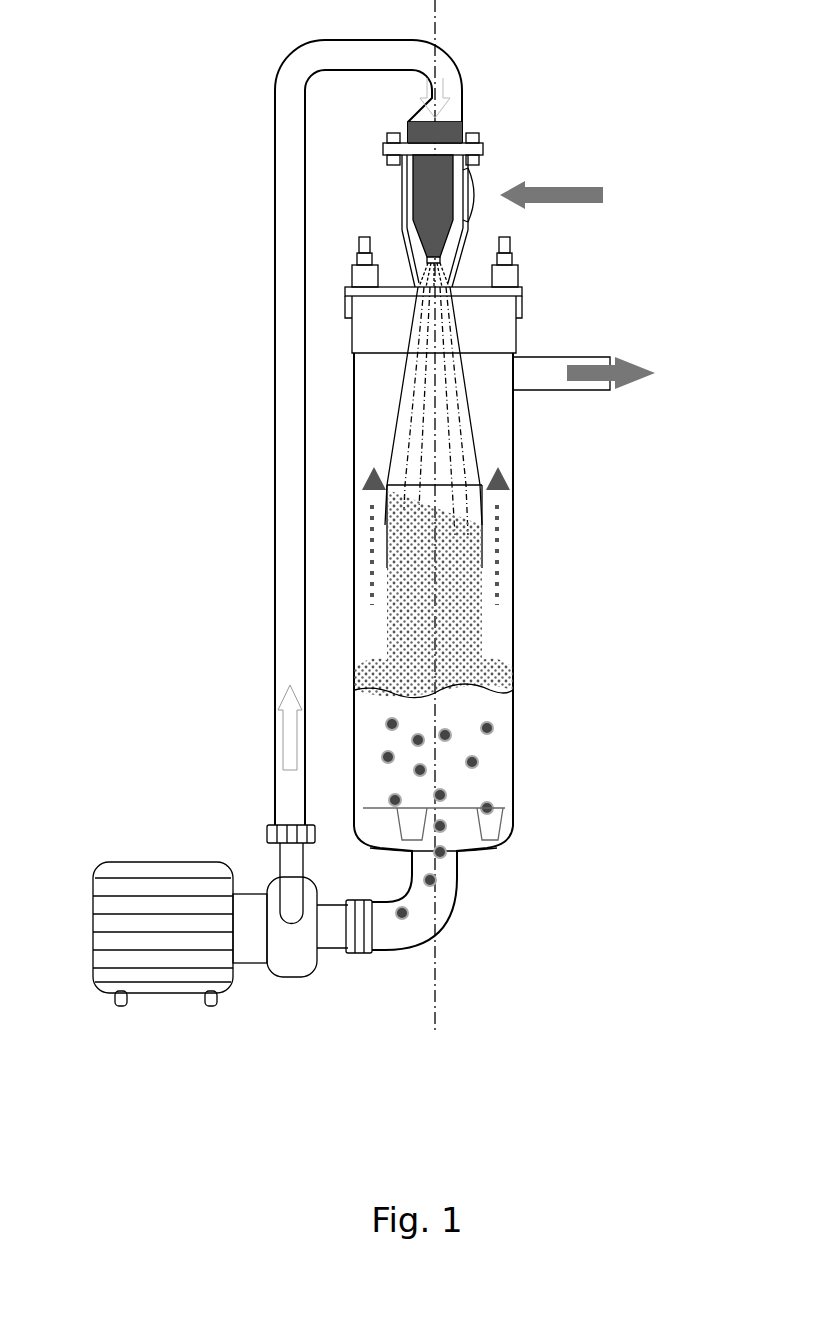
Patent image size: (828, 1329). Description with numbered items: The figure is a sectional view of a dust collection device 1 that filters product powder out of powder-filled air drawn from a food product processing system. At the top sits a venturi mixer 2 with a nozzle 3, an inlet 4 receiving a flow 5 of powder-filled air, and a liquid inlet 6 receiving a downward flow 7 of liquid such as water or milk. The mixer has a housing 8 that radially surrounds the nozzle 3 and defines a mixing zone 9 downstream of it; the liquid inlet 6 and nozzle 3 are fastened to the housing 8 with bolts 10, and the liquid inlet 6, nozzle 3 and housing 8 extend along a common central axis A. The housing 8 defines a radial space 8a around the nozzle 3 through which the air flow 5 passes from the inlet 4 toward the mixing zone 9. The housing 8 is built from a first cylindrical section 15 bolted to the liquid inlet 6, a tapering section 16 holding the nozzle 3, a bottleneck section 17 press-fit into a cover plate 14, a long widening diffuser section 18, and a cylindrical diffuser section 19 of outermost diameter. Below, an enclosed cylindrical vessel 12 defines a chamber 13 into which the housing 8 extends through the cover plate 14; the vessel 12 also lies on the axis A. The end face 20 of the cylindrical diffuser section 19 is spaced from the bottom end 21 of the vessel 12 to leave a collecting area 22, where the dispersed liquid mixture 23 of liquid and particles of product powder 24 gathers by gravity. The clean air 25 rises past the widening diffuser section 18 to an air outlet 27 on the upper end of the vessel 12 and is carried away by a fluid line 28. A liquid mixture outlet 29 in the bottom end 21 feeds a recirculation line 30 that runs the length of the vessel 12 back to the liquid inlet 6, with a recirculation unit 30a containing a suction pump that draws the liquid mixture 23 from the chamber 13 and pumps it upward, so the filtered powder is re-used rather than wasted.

The dust collection device 1 is at (494, 74).
The venturi mixer 2 is at (487, 146).
The nozzle 3 is at (424, 270).
The inlet 4 is at (468, 190).
The flow of powder-filled air 5 is at (583, 183).
The liquid inlet 6 is at (408, 122).
The flow of liquid 7 is at (433, 103).
The housing 8 is at (402, 180).
The radial space 8a is at (465, 233).
The mixing zone 9 is at (440, 271).
The bolts 10 is at (387, 138).
The vessel 12 is at (353, 411).
The chamber 13 is at (497, 339).
The cover plate 14 is at (346, 291).
The first cylindrical section 15 is at (404, 207).
The tapering section 16 is at (405, 248).
The bottleneck section 17 is at (455, 285).
The widening diffuser section 18 is at (410, 343).
The cylindrical diffuser section 19 is at (485, 500).
The end face 20 is at (487, 595).
The bottom end 21 is at (512, 833).
The collecting area 22 is at (500, 749).
The liquid mixture 23 is at (492, 782).
The particles of product powder 24 is at (492, 812).
The clean air 25 is at (368, 503).
The air outlet 27 is at (514, 368).
The fluid line 28 is at (600, 357).
The liquid mixture outlet 29 is at (457, 853).
The recirculation line 30 is at (274, 472).
The recirculation unit 30a is at (104, 864).
The central axis A is at (438, 968).